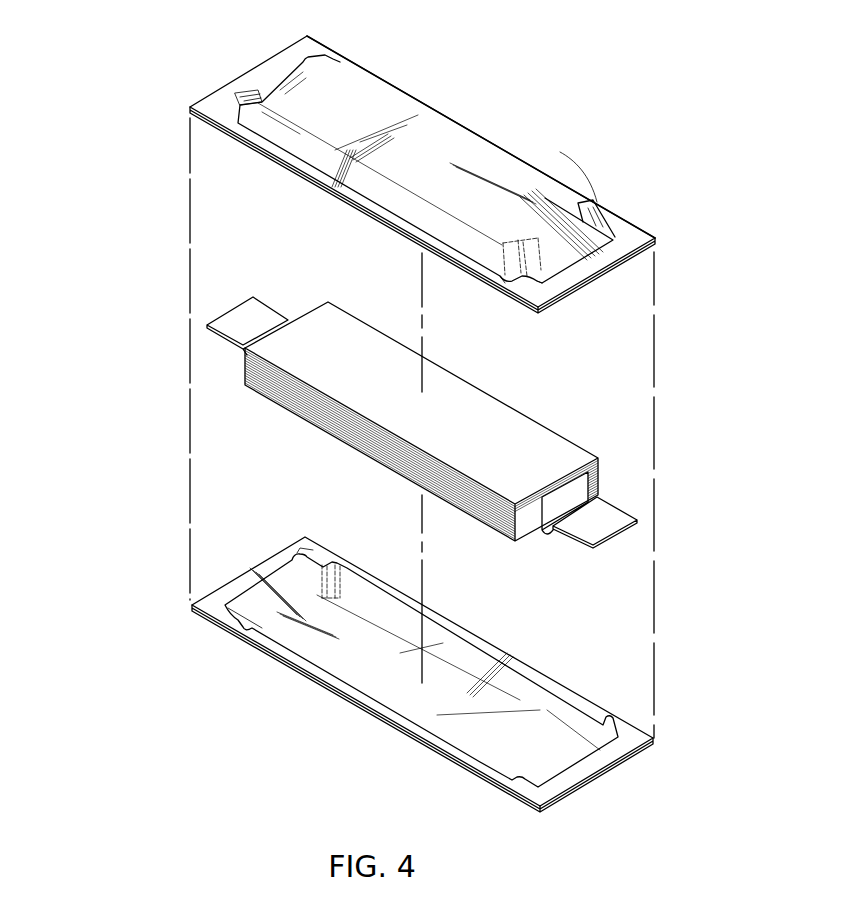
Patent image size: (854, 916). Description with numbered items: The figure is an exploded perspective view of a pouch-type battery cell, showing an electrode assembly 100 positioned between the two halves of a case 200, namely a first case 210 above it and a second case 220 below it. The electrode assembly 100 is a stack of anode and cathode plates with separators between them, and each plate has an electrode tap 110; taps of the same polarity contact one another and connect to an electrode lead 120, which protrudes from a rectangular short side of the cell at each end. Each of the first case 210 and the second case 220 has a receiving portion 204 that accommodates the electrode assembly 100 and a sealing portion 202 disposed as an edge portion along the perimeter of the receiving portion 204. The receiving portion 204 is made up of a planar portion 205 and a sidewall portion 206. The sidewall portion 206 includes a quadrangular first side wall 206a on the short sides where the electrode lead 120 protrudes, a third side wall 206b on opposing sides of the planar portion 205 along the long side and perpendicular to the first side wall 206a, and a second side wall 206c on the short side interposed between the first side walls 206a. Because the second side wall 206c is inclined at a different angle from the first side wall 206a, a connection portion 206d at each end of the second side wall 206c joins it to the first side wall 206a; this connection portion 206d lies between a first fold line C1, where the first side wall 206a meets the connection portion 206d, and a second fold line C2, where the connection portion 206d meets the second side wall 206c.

The electrode assembly 100 is at (555, 434).
The electrode tap 110 is at (582, 487).
The electrode lead 120 is at (257, 313).
The case 200 is at (101, 278).
The sealing portion 202 is at (565, 282).
The receiving portion 204 is at (404, 92).
The planar portion 205 is at (358, 73).
The sidewall portion 206 is at (692, 75).
The first side wall 206a is at (512, 247).
The third side wall 206b is at (432, 218).
The second side wall 206c is at (603, 231).
The connection portion 206d is at (614, 245).
The first case 210 is at (278, 137).
The second case 220 is at (223, 605).
The first fold line C1 is at (503, 279).
The second fold line C2 is at (533, 276).